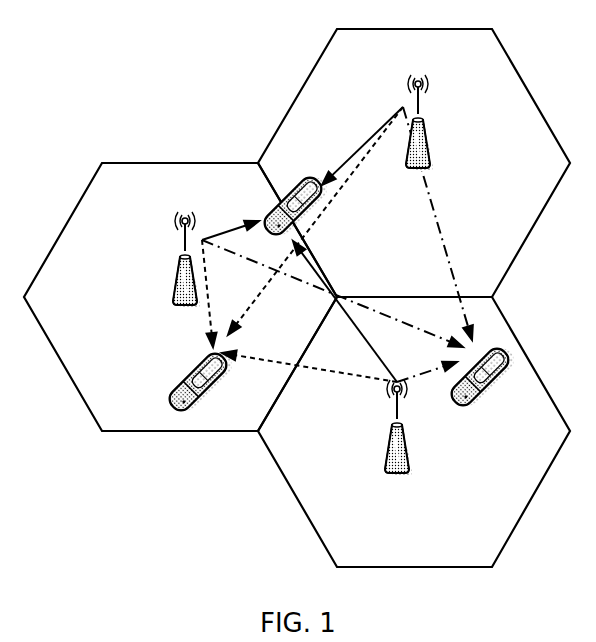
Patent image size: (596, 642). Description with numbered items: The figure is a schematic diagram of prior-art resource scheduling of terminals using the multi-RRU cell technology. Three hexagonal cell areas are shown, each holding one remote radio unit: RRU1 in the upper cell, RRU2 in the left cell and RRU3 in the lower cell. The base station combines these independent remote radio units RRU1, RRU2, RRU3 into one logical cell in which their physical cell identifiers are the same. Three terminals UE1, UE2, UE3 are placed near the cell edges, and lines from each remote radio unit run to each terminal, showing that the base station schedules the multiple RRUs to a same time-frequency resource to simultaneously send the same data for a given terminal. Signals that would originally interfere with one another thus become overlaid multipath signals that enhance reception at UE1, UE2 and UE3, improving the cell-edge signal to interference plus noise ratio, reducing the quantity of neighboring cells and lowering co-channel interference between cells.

The remote radio unit RRU1 is at (457, 136).
The remote radio unit RRU2 is at (146, 267).
The remote radio unit RRU3 is at (395, 446).
The terminal UE1 is at (317, 211).
The terminal UE2 is at (171, 382).
The terminal UE3 is at (485, 392).